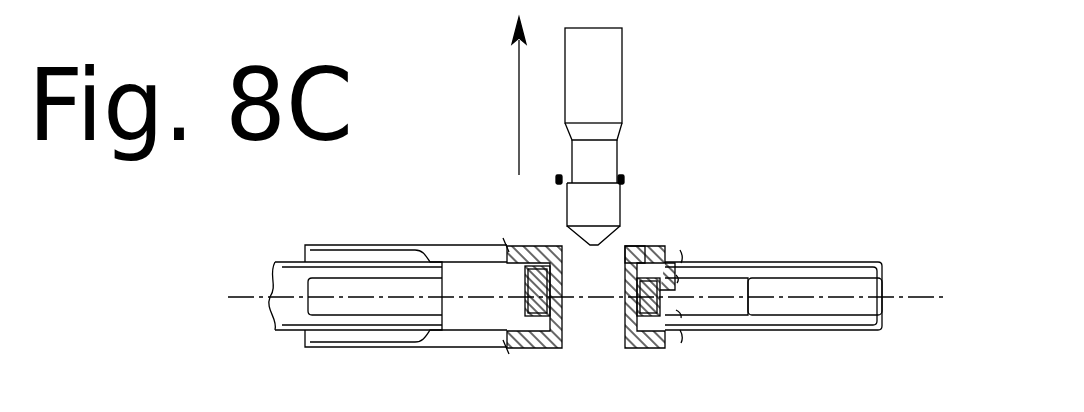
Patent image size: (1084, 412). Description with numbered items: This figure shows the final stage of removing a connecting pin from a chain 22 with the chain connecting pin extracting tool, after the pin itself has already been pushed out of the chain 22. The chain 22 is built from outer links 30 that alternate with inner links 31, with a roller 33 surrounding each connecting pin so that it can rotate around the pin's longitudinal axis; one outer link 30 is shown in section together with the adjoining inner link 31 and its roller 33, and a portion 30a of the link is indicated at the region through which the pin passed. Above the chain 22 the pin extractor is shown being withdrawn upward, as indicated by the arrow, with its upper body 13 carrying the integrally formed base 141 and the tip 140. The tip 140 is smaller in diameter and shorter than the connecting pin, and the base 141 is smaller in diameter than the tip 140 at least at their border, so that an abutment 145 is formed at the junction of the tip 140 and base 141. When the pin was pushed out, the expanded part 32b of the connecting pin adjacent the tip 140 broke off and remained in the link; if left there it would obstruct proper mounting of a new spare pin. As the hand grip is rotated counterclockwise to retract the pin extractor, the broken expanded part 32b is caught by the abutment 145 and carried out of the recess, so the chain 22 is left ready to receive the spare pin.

The nozzle body 13 is at (617, 58).
The base 141 is at (580, 155).
The expanded part 32b is at (622, 176).
The abutment 145 is at (563, 184).
The tip 140 is at (572, 220).
The chain 22 is at (820, 213).
The outer link 30 is at (658, 247).
The holder block upper portion 30a is at (627, 245).
The inner link 31 is at (730, 272).
The roller 33 is at (648, 348).